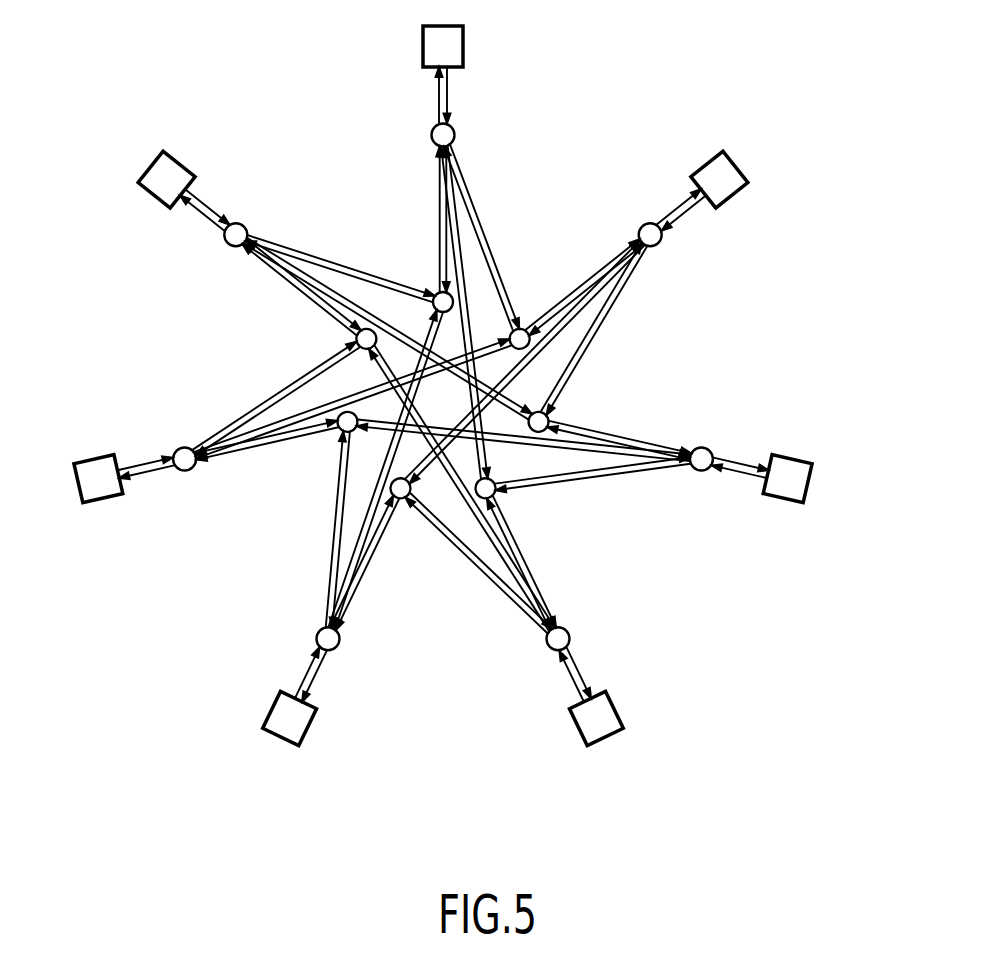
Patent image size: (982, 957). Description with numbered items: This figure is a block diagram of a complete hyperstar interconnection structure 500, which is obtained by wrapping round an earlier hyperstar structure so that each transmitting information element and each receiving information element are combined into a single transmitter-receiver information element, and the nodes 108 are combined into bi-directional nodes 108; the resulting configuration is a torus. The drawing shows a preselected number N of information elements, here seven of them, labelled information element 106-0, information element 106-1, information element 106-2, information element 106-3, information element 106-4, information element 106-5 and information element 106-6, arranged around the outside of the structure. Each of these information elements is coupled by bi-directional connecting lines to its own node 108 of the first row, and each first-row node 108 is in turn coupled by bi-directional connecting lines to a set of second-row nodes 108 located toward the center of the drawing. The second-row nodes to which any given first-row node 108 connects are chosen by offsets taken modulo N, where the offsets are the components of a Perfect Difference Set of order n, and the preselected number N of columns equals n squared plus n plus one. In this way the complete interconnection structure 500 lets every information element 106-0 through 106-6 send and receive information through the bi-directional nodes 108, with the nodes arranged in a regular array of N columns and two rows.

The complete hyperstar interconnection structure 500 is at (635, 123).
The node 108 is at (456, 133).
The information element 106-0 is at (463, 42).
The information element 106-1 is at (742, 172).
The information element 106-2 is at (815, 487).
The information element 106-3 is at (612, 705).
The information element 106-4 is at (268, 706).
The information element 106-5 is at (110, 452).
The information element 106-6 is at (150, 164).